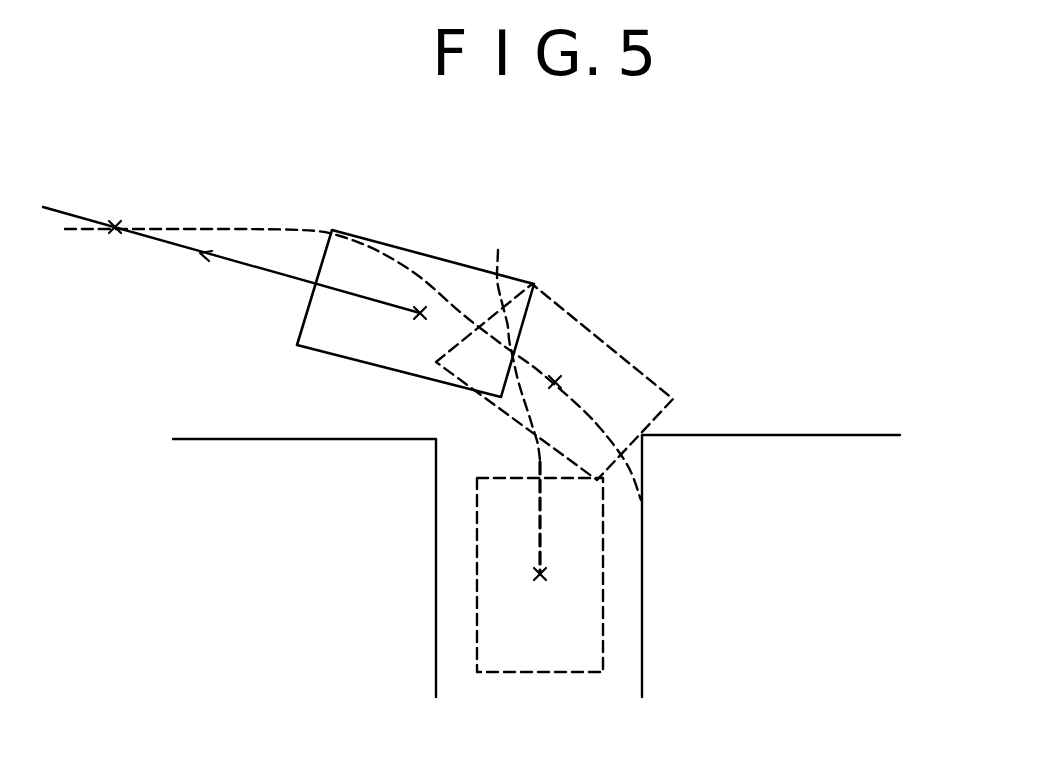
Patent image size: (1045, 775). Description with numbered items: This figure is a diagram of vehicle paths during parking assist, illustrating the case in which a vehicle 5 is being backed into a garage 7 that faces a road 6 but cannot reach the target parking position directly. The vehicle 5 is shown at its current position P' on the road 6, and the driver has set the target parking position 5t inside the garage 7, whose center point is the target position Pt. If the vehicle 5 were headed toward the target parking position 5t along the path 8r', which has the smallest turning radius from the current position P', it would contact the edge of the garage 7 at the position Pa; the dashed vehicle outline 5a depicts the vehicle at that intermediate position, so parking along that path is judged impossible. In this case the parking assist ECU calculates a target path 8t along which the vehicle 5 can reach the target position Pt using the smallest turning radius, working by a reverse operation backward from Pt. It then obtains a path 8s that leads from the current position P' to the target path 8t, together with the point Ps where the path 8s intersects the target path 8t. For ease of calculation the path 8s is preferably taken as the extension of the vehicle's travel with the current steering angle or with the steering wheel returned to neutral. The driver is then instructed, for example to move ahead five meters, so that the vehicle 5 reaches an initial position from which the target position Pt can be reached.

The vehicle 5 is at (443, 257).
The vehicle at intermediate position 5a is at (575, 318).
The target parking position 5t is at (477, 635).
The road 6 is at (753, 285).
The garage 7 is at (643, 550).
The path 8s is at (233, 262).
The target path 8t is at (380, 230).
The path 8r' is at (513, 396).
The point Ps(Xs, Ys) Ps is at (115, 227).
The current position P'(x', y') P' is at (369, 365).
The position Pa(Xa, Ya) Pa is at (558, 380).
The target parking position Pt(Xt, Yt) Pt is at (547, 573).